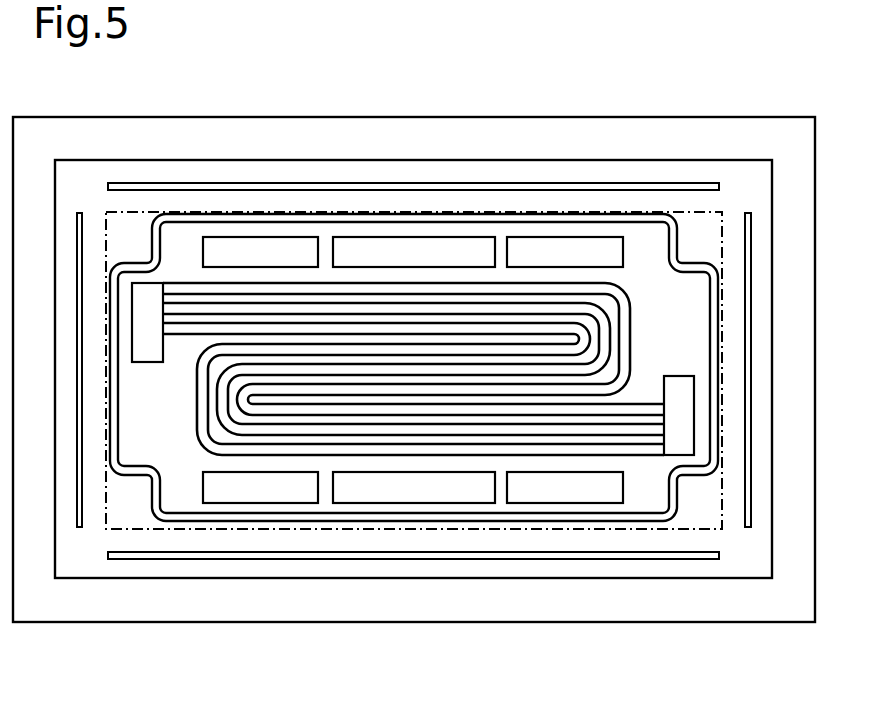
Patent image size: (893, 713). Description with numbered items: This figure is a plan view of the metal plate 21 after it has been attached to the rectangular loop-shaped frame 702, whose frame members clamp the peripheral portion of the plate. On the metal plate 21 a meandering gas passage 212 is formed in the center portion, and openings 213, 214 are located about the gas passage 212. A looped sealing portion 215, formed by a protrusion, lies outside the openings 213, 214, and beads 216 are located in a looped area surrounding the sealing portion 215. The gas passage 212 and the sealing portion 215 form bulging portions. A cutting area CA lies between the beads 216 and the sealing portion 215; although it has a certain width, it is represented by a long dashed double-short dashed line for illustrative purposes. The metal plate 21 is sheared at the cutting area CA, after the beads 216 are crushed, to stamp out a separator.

The metal plate 21 is at (431, 117).
The frame 702 is at (607, 118).
The cutting area CA is at (672, 212).
The beads 216 is at (350, 182).
The looped sealing portion 215 is at (533, 211).
The openings 214 is at (246, 242).
The openings 213 is at (135, 338).
The meandering gas passage 212 is at (596, 448).